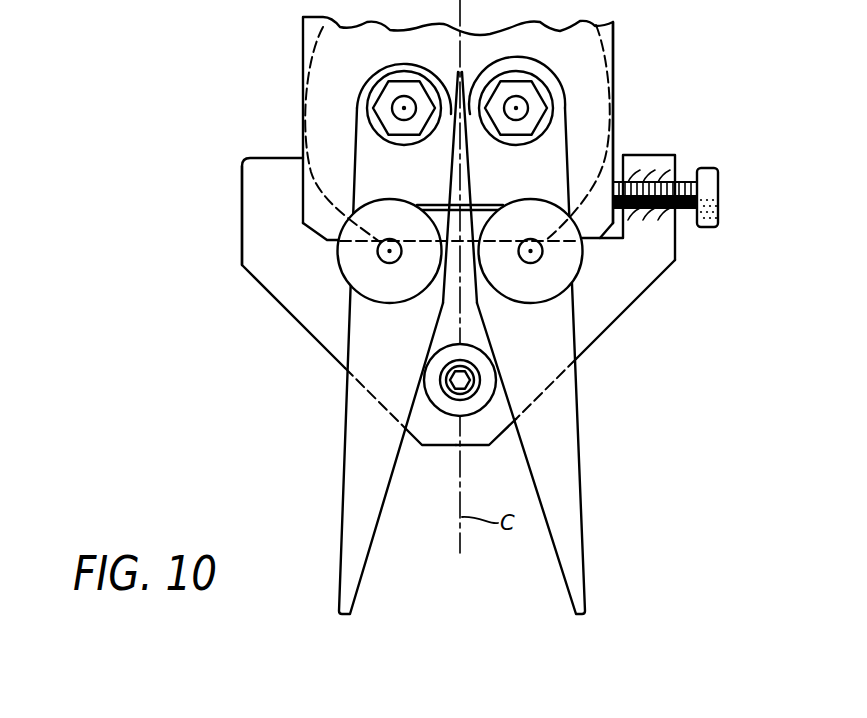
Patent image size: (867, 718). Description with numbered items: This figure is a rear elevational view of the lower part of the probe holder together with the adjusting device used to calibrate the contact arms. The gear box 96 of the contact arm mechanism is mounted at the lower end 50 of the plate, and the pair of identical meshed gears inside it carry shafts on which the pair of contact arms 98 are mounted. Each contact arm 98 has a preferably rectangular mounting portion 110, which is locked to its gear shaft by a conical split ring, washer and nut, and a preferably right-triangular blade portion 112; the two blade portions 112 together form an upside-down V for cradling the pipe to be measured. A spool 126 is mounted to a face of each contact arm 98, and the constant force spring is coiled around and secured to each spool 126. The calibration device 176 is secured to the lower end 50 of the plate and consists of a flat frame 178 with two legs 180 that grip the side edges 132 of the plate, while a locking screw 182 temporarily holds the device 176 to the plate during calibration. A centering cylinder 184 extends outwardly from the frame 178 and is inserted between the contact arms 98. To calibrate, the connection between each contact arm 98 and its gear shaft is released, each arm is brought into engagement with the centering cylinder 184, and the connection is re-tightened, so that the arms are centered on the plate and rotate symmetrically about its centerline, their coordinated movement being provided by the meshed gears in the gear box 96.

The gear box 96 is at (613, 38).
The side edges of the plate 132 is at (613, 97).
The mounting portion 110 is at (563, 146).
The lower end of the plate 50 is at (595, 150).
The legs 180 is at (257, 198).
The locking screw 182 is at (707, 193).
The spool 126 is at (353, 267).
The flat frame 178 is at (303, 303).
The calibration device 176 is at (592, 332).
The contact arms 98 is at (353, 347).
The blade portion 112 is at (577, 485).
The centering cylinder 184 is at (458, 408).